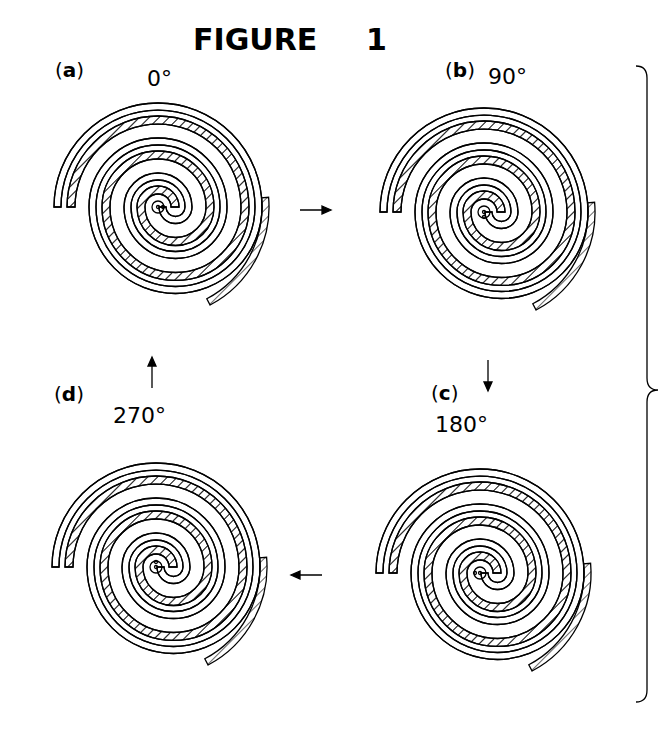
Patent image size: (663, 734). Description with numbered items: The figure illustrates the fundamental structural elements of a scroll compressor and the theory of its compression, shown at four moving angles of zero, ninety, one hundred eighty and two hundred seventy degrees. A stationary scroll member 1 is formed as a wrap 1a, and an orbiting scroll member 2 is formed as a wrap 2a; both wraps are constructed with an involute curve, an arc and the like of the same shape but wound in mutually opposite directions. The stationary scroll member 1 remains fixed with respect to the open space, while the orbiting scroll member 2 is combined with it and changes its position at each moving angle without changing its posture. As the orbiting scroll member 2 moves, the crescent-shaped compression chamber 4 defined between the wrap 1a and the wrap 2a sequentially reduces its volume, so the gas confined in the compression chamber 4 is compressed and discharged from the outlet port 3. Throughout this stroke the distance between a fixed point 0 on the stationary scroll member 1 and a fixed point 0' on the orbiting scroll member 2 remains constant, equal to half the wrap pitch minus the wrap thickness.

The fixed point on the stationary scroll member 0 is at (261, 460).
The fixed point on the orbiting scroll member 0' is at (361, 443).
The stationary scroll member 1 is at (68, 227).
The wrap 1a is at (227, 173).
The orbiting scroll member 2 is at (232, 150).
The wrap 2a is at (252, 187).
The outlet port 3 is at (132, 192).
The compression chamber 4 is at (240, 217).